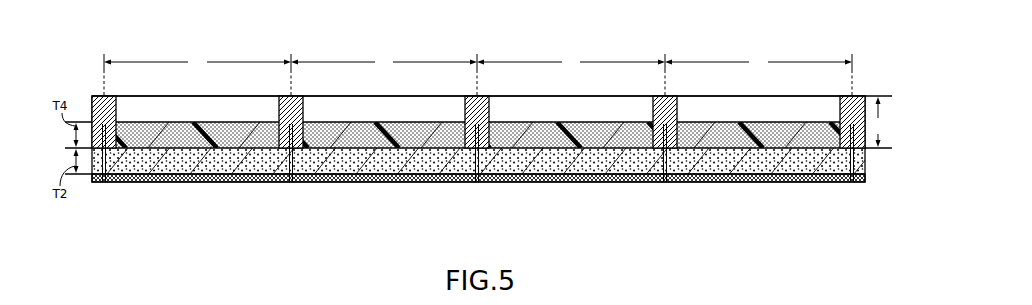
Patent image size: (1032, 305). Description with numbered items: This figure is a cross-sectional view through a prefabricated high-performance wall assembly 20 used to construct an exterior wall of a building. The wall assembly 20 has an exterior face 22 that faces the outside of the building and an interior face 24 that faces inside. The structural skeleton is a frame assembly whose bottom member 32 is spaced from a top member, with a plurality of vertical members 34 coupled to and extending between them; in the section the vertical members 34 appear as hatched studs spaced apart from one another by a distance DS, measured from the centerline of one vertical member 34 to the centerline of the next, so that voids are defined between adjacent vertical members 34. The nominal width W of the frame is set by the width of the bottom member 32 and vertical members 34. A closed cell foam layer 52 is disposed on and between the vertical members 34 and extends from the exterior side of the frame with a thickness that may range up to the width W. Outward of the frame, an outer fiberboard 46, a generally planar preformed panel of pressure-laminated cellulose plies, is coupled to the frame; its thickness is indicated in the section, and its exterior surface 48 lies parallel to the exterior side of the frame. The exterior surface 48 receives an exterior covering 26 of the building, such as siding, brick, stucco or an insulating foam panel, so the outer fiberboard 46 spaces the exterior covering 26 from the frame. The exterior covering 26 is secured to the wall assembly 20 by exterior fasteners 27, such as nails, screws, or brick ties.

The high-performance wall assembly 20 is at (864, 56).
The exterior face 22 is at (542, 199).
The interior face 24 is at (571, 38).
The exterior covering 26 is at (723, 182).
The exterior fasteners 27 is at (103, 183).
The bottom member 32 is at (777, 101).
The vertical members 34 is at (112, 97).
The outer fiberboard 46 is at (252, 170).
The exterior surface 48 is at (362, 174).
The closed cell foam layer 52 is at (228, 128).